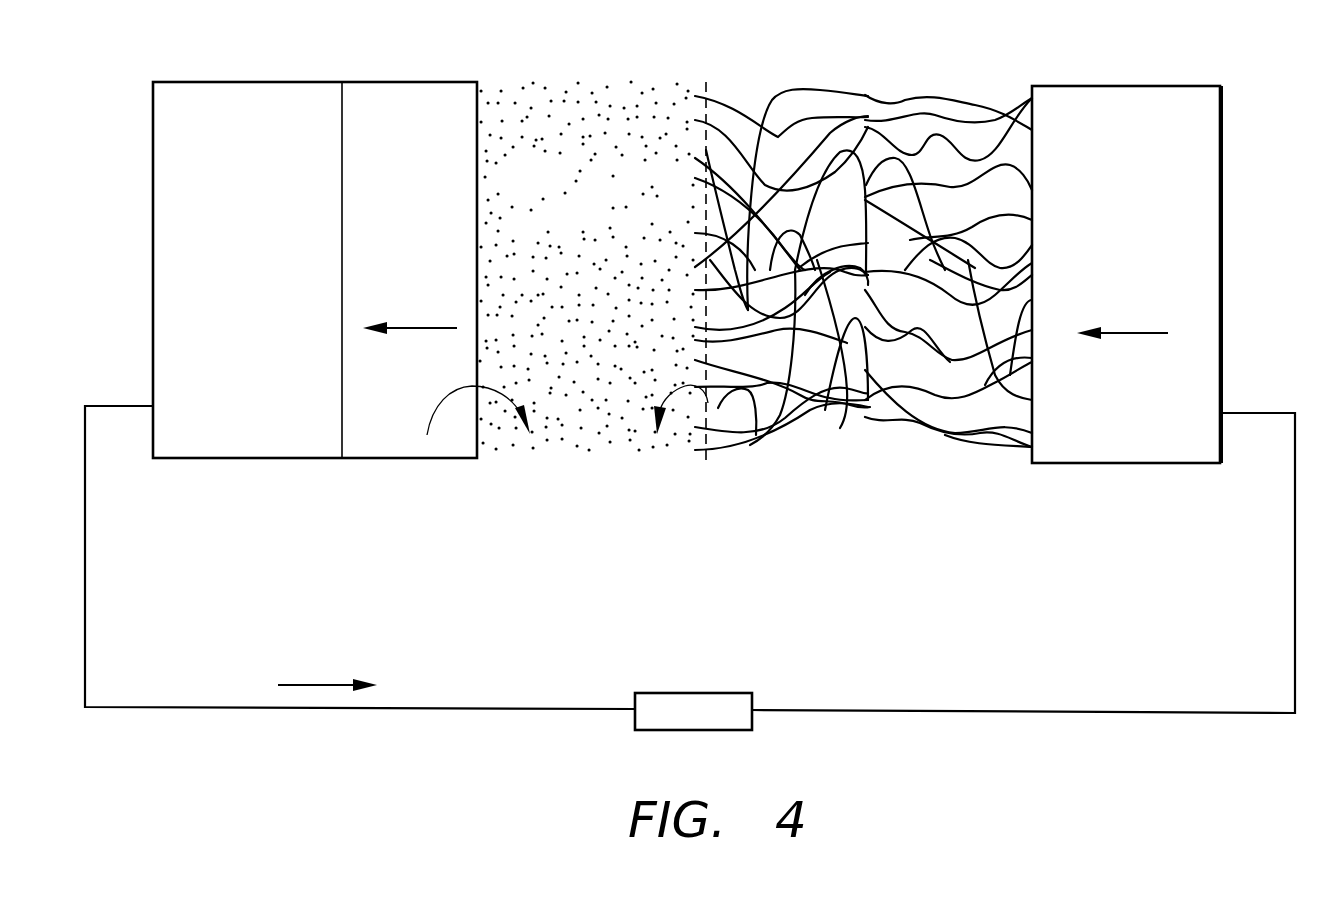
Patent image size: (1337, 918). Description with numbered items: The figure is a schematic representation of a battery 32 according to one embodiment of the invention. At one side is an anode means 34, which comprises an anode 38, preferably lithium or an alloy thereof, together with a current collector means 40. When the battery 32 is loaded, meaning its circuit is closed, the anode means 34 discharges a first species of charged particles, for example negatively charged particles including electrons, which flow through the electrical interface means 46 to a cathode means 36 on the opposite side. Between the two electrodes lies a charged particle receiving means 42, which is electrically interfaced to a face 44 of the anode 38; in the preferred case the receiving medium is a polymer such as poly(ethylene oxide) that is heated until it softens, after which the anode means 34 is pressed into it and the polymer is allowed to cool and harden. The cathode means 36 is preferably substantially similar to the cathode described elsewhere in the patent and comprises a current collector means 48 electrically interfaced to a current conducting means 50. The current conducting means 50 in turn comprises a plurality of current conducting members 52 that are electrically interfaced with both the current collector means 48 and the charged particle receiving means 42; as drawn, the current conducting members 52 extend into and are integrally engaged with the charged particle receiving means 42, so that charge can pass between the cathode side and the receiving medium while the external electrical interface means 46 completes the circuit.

The battery 32 is at (1090, 35).
The anode means 34 is at (255, 58).
The cathode means 36 is at (1250, 175).
The anode 38 is at (425, 82).
The current collector means 40 is at (185, 101).
The charged particle receiving means 42 is at (580, 90).
The face 44 is at (577, 453).
The electrical interface means 46 is at (863, 710).
The current collector means 48 is at (1200, 262).
The current conducting means 50 is at (780, 92).
The current conducting members 52 is at (888, 100).